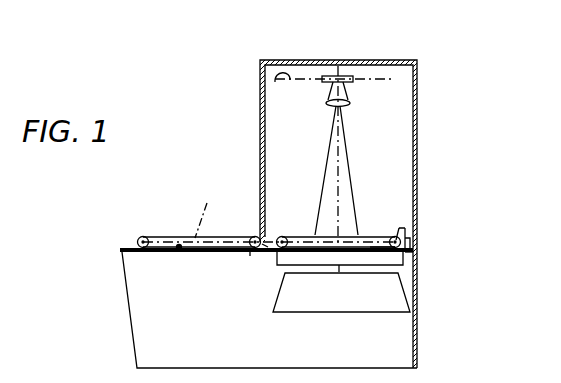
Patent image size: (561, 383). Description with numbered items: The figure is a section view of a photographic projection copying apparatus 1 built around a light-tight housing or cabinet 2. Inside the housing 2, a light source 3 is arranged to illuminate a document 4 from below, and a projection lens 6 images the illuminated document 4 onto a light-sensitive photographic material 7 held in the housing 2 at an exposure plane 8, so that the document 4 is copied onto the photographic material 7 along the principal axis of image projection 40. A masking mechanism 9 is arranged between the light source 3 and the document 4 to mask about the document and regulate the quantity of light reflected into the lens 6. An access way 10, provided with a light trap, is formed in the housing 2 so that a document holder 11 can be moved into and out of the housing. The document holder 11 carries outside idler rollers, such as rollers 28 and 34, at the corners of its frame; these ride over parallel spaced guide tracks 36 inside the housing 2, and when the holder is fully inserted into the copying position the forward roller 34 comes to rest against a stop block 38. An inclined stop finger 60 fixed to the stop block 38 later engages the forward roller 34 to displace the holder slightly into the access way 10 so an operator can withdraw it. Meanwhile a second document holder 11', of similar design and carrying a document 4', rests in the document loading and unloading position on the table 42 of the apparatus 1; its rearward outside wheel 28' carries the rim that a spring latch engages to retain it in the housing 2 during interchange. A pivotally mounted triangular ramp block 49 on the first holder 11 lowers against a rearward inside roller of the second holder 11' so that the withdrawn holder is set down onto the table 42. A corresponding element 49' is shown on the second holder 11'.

The photographic projection copying apparatus 1 is at (430, 125).
The housing 2 is at (260, 110).
The light source 3 is at (286, 302).
The document 4 is at (344, 155).
The document 4' is at (204, 211).
The projection lens 6 is at (352, 104).
The light-sensitive photographic material 7 is at (343, 78).
The exposure plane 8 is at (283, 85).
The masking mechanism 9 is at (277, 260).
The access way 10 is at (255, 236).
The document holder 11 is at (269, 223).
The second document holder 11' is at (199, 213).
The outside idler roller 28 is at (294, 219).
The rearward outside wheel 28' is at (123, 228).
The outside idler roller 34 is at (395, 236).
The guide track 36 is at (383, 250).
The stop block 38 is at (408, 237).
The principal axis of image projection 40 is at (337, 191).
The table 42 is at (179, 250).
The ramp block 49 is at (430, 253).
The bearing 49' is at (277, 227).
The inclined stop finger 60 is at (404, 228).